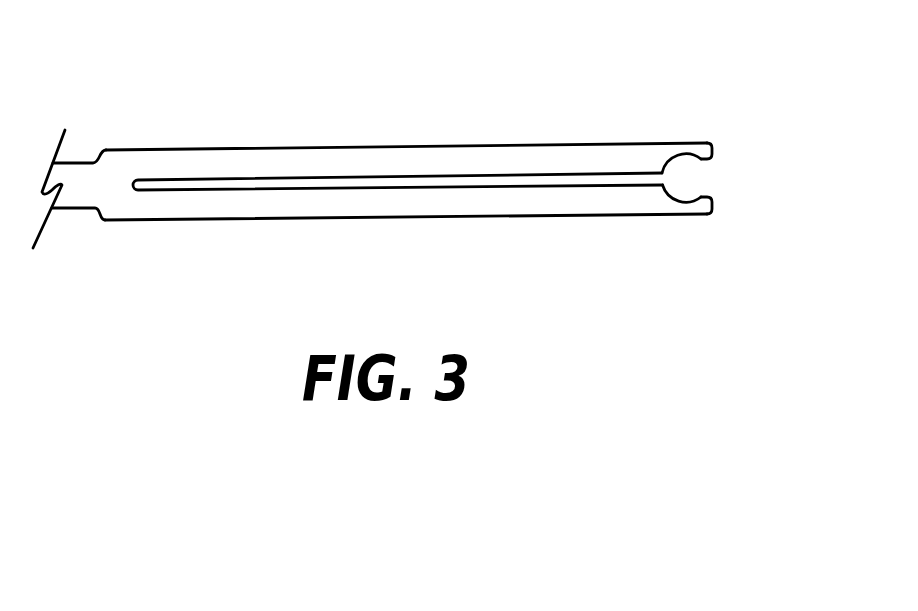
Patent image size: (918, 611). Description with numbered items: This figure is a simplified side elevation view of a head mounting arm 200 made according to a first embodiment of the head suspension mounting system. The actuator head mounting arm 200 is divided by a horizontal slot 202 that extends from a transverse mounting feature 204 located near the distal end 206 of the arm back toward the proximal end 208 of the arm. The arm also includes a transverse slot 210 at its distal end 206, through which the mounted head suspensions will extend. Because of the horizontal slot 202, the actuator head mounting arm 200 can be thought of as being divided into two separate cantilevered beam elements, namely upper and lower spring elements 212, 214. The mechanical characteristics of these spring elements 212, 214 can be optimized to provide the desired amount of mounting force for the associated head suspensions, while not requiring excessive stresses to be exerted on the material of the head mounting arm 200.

The head mounting arm 200 is at (243, 87).
The horizontal slot 202 is at (350, 183).
The transverse mounting feature 204 is at (692, 145).
The distal end 206 is at (713, 146).
The proximal end 208 is at (112, 195).
The transverse slot 210 is at (697, 177).
The upper spring element 212 is at (495, 158).
The lower spring element 214 is at (470, 205).